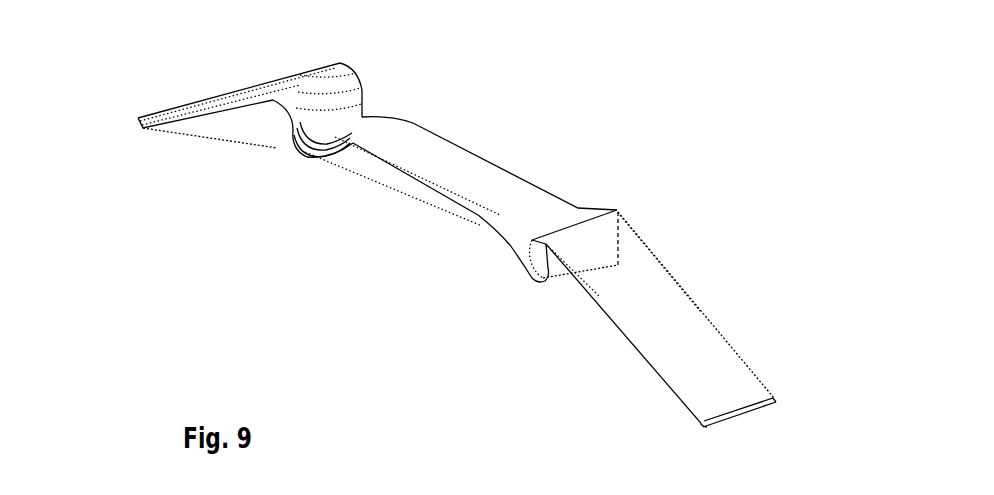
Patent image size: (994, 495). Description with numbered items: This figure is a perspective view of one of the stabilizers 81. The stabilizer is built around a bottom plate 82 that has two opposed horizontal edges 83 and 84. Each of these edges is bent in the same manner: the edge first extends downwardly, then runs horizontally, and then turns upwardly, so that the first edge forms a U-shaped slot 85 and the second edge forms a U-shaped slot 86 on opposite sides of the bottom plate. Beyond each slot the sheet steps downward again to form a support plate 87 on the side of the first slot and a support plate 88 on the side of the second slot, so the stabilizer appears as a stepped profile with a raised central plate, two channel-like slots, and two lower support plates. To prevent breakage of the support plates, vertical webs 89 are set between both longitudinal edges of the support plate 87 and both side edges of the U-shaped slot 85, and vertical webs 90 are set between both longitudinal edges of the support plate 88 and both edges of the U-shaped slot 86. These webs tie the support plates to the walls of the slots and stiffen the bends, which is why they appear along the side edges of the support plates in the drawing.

The stabilizer 81 is at (545, 132).
The bottom plate 82 is at (415, 165).
The horizontal edge 83 is at (345, 140).
The horizontal edge 84 is at (475, 212).
The U-shaped slot 85 is at (290, 140).
The U-shaped slot 86 is at (523, 275).
The support plate 87 is at (245, 88).
The support plate 88 is at (628, 292).
The vertical web 89 is at (320, 85).
The vertical web 90 is at (580, 297).